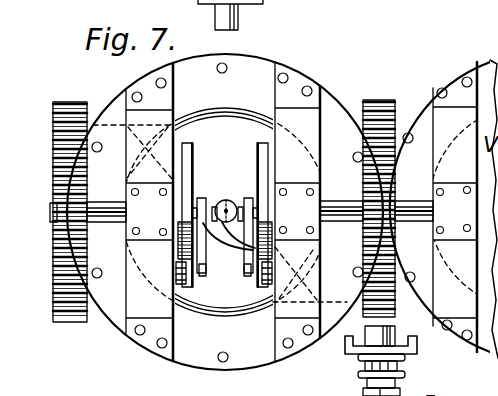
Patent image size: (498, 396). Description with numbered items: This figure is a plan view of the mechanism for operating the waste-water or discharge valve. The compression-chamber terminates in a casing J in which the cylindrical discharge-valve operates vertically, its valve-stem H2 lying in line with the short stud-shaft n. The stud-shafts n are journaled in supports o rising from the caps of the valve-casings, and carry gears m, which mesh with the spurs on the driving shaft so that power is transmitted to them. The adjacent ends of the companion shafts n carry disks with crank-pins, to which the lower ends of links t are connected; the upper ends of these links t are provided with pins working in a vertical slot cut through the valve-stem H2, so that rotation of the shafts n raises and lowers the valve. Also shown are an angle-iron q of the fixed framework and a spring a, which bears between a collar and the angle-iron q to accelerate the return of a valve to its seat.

The casing J is at (476, 68).
The supports o is at (457, 224).
The gears m is at (67, 110).
The short stud-shafts n is at (113, 214).
The valve-stem H2 is at (227, 207).
The links t is at (204, 246).
The angle-iron q is at (347, 349).
The spring a is at (366, 375).